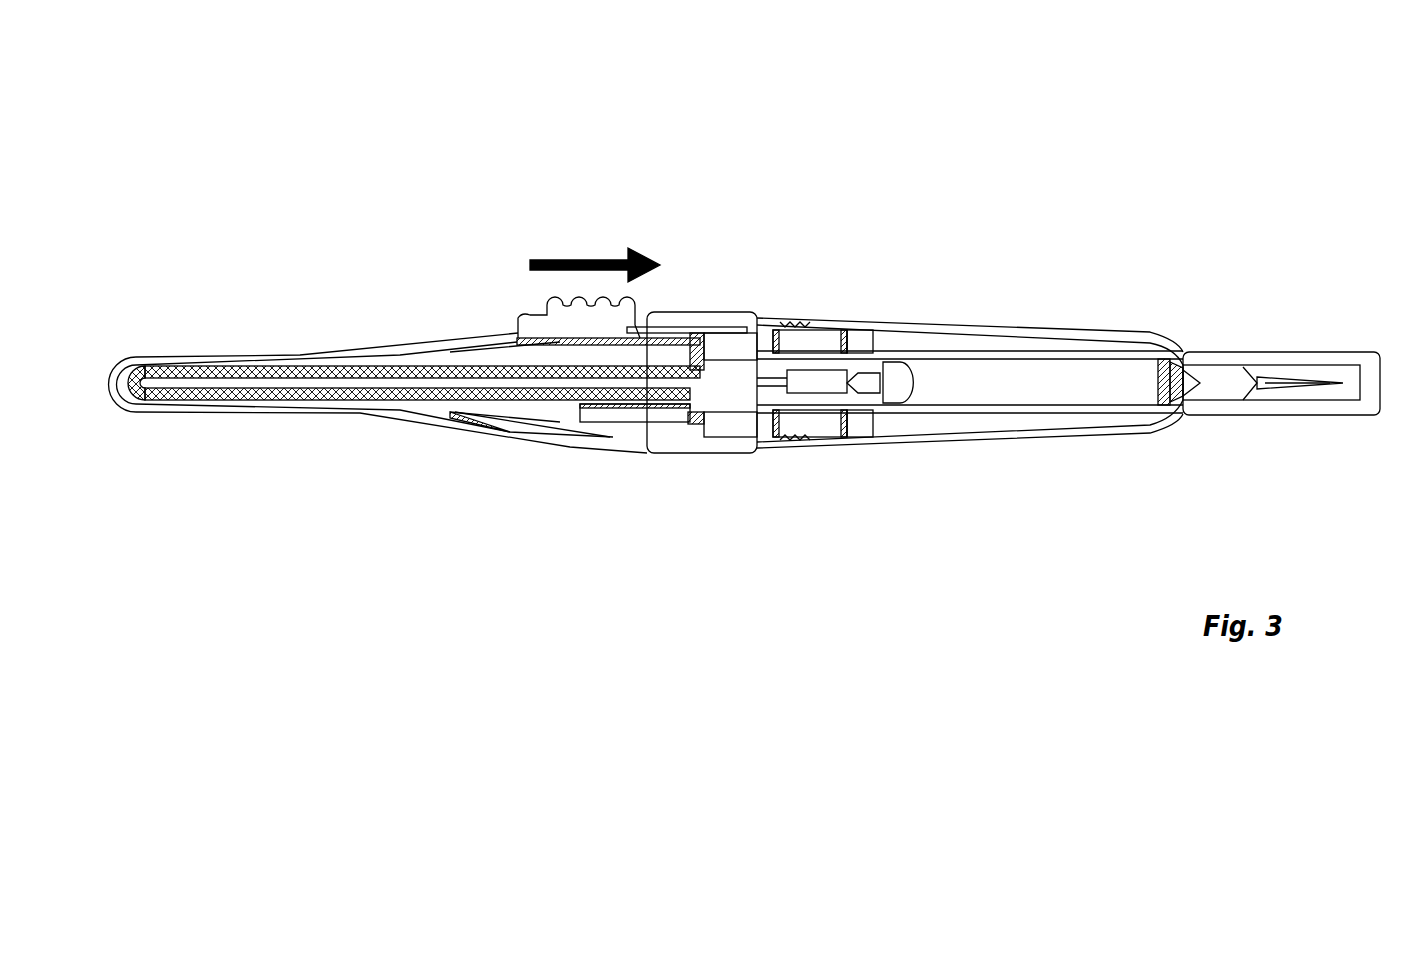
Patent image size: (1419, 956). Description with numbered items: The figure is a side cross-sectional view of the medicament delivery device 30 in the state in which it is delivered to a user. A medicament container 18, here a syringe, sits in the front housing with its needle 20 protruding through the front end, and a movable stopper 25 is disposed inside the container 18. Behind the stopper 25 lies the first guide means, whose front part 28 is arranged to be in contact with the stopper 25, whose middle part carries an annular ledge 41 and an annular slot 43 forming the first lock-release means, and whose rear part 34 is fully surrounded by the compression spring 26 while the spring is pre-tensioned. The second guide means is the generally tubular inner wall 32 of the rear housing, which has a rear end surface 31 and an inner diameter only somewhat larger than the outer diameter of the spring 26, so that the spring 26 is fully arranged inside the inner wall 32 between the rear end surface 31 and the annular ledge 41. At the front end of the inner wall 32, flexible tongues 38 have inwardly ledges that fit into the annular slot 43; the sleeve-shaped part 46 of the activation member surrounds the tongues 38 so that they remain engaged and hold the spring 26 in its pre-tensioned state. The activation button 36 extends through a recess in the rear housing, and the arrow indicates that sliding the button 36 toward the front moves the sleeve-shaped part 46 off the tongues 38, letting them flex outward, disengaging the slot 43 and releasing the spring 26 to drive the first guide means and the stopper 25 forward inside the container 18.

The drive assembly / housing 30 is at (506, 206).
The compression spring 26 is at (205, 367).
The rear part of the first guide means 34 is at (330, 385).
The rear end surface 31 is at (156, 386).
The tubular inner wall 32 is at (490, 405).
The activation button 36 is at (541, 330).
The annular ledge 41 is at (692, 368).
The annular slot 43 is at (710, 372).
The flexible tongues 38 is at (657, 405).
The sleeve-shaped part 46 is at (697, 422).
The front part of the first guide means 28 is at (783, 396).
The movable stopper 25 is at (895, 402).
The medicament container 18 is at (1006, 397).
The needle 20 is at (1272, 378).